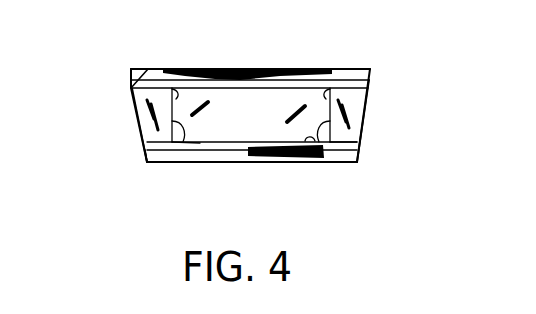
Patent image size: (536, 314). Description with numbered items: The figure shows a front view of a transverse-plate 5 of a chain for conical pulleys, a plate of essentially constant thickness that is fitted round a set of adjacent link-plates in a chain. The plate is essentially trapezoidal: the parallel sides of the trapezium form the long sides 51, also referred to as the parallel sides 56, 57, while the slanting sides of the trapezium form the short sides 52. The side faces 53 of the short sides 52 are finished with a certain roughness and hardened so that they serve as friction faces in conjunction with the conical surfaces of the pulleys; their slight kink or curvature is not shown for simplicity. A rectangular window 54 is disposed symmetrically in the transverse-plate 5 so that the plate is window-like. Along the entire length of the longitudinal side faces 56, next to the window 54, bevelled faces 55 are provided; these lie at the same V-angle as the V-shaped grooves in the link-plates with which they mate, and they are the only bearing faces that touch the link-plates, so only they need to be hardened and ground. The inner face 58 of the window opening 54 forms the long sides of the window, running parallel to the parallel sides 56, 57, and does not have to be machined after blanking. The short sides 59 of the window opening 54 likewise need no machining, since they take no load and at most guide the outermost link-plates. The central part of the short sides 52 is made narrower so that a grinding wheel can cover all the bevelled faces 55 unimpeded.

The transverse-plate 5 is at (376, 72).
The long sides 51 is at (253, 68).
The short sides 52 is at (146, 121).
The side faces 53 is at (135, 97).
The rectangular window 54 is at (255, 130).
The bevelled faces 55 is at (193, 68).
The longitudinal side faces 56 is at (317, 68).
The parallel side of the trapezium 57 is at (148, 67).
The inner face of the window opening 58 is at (137, 97).
The short sides of the window opening 59 is at (180, 160).